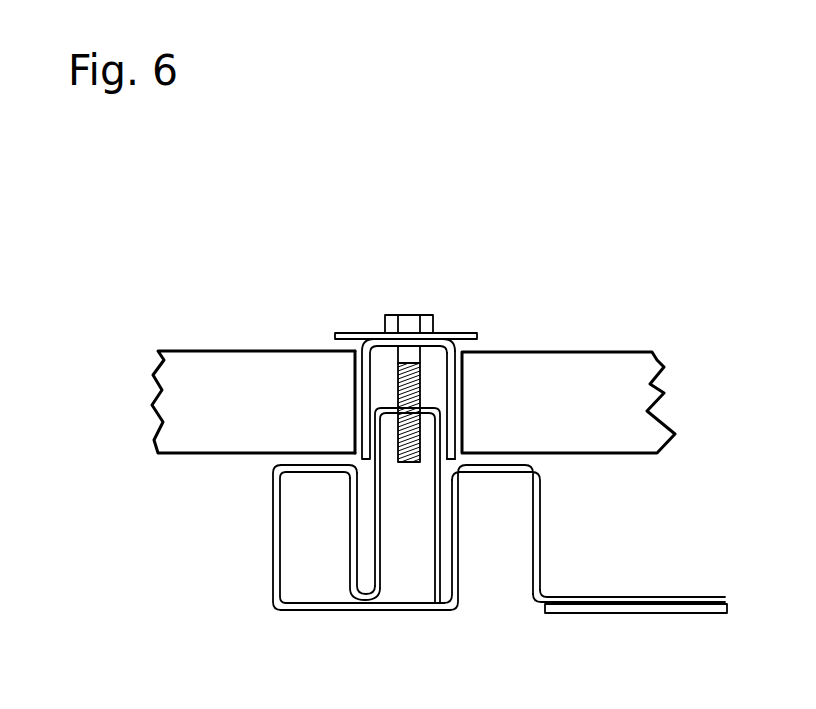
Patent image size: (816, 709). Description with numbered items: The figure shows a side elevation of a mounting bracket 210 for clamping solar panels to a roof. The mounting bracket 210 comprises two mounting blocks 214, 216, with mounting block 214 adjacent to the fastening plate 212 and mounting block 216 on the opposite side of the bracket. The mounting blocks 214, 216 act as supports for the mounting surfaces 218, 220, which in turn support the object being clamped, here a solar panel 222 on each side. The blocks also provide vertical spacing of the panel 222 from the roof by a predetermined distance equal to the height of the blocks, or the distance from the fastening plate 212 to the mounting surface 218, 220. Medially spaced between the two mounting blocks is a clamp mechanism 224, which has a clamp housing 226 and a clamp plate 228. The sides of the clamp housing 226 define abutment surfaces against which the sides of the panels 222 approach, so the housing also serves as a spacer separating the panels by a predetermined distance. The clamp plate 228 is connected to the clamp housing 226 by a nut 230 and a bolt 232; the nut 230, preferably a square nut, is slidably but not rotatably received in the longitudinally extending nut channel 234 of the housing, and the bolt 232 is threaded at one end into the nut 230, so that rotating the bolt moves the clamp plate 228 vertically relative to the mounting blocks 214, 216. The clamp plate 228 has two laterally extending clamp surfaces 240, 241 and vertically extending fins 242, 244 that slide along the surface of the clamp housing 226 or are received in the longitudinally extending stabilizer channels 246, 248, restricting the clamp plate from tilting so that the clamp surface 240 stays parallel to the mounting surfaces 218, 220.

The mounting bracket 210 is at (229, 232).
The fastening plate 212 is at (700, 593).
The mounting block 214 is at (541, 572).
The mounting block 216 is at (273, 567).
The mounting surface 218 is at (540, 473).
The mounting surface 220 is at (272, 470).
The solar panel 222 is at (201, 366).
The clamp mechanism 224 is at (422, 256).
The clamp housing 226 is at (447, 482).
The clamp plate 228 is at (367, 332).
The nut 230 is at (388, 432).
The bolt 232 is at (417, 433).
The nut channel 234 is at (425, 400).
The clamp surface 240 is at (470, 343).
The clamp surface 241 is at (340, 347).
The fin 242 is at (455, 380).
The fin 244 is at (352, 390).
The stabilizer channel 246 is at (328, 460).
The stabilizer channel 248 is at (447, 555).